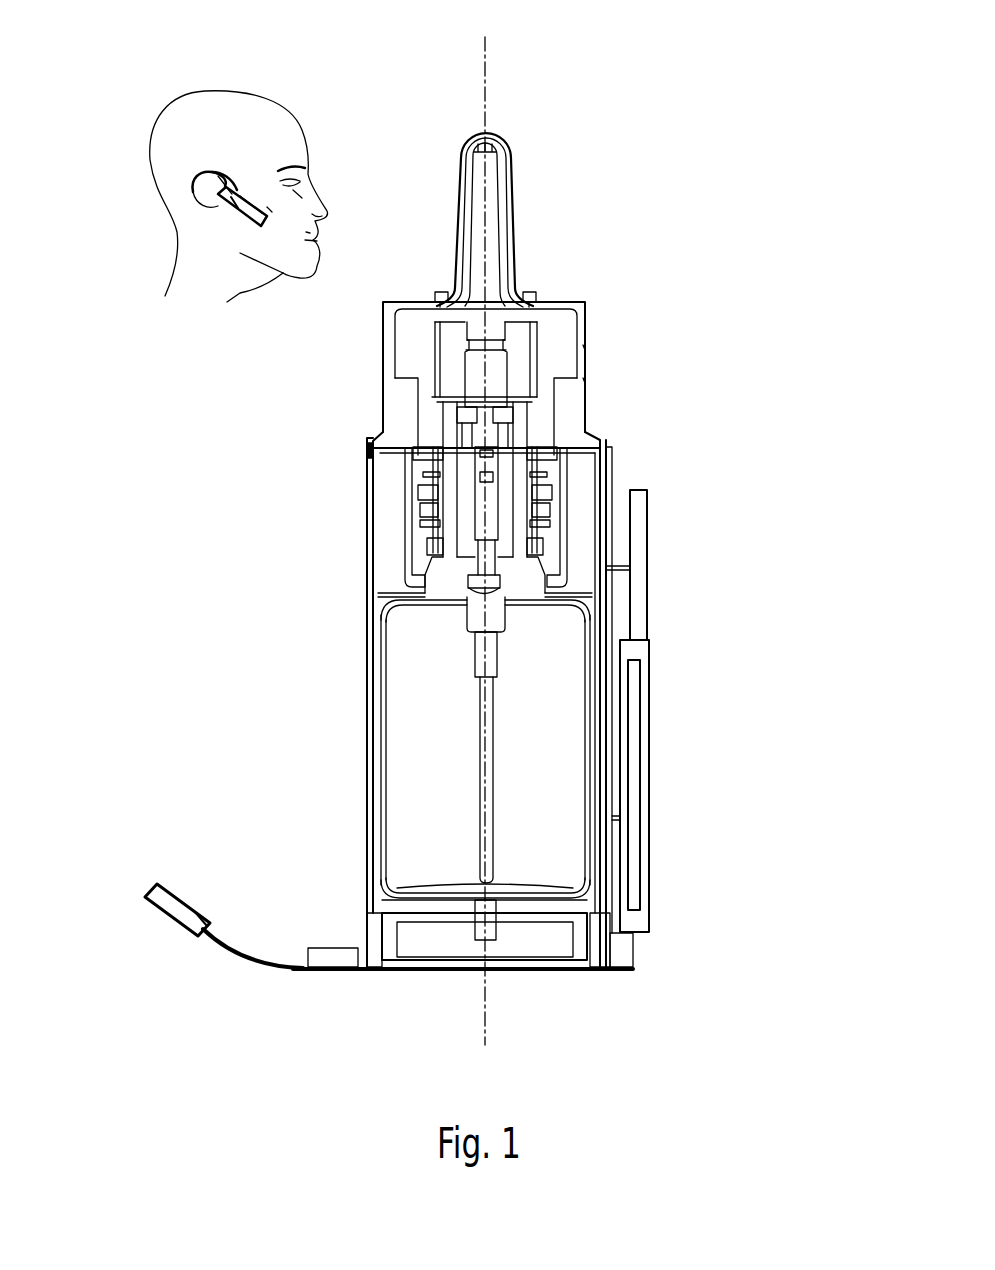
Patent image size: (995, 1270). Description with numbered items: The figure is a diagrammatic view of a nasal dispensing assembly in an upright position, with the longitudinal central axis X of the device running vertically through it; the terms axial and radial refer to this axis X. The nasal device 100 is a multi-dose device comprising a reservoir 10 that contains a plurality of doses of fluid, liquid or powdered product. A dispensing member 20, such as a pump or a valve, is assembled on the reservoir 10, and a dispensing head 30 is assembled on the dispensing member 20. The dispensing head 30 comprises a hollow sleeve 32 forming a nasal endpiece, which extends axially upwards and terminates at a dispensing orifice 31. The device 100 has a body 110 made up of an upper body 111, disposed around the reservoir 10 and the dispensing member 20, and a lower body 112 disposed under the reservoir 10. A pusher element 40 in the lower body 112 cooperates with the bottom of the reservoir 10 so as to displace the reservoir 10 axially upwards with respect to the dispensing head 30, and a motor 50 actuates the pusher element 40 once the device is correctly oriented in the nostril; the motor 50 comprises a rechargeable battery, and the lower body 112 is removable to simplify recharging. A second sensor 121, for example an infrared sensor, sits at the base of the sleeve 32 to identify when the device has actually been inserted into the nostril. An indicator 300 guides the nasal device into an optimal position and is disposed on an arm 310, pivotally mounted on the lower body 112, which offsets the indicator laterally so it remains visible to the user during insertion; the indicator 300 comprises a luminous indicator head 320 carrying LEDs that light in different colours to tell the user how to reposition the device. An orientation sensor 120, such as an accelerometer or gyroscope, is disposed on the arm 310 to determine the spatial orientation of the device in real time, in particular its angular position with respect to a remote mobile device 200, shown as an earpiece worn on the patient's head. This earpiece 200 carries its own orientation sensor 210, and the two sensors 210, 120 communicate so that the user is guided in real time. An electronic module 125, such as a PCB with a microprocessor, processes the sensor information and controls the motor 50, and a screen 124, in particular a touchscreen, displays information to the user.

The reservoir 10 is at (410, 714).
The dispensing member 20 is at (476, 473).
The dispensing head 30 is at (523, 200).
The dispensing orifice 31 is at (487, 138).
The hollow sleeve 32 is at (460, 243).
The pusher element 40 is at (489, 915).
The motor 50 is at (558, 943).
The nasal device 100 is at (600, 382).
The body 110 is at (511, 720).
The upper body 111 is at (374, 793).
The lower body 112 is at (596, 965).
The orientation sensor 120 is at (338, 957).
The second sensor 121 is at (531, 293).
The screen 124 is at (637, 529).
The electronic module 125 is at (649, 718).
The remote mobile device 200 is at (200, 170).
The orientation sensor 210 is at (231, 192).
The indicator 300 is at (221, 904).
The arm 310 is at (284, 964).
The luminous indicator head 320 is at (180, 888).
The longitudinal central axis X is at (486, 66).